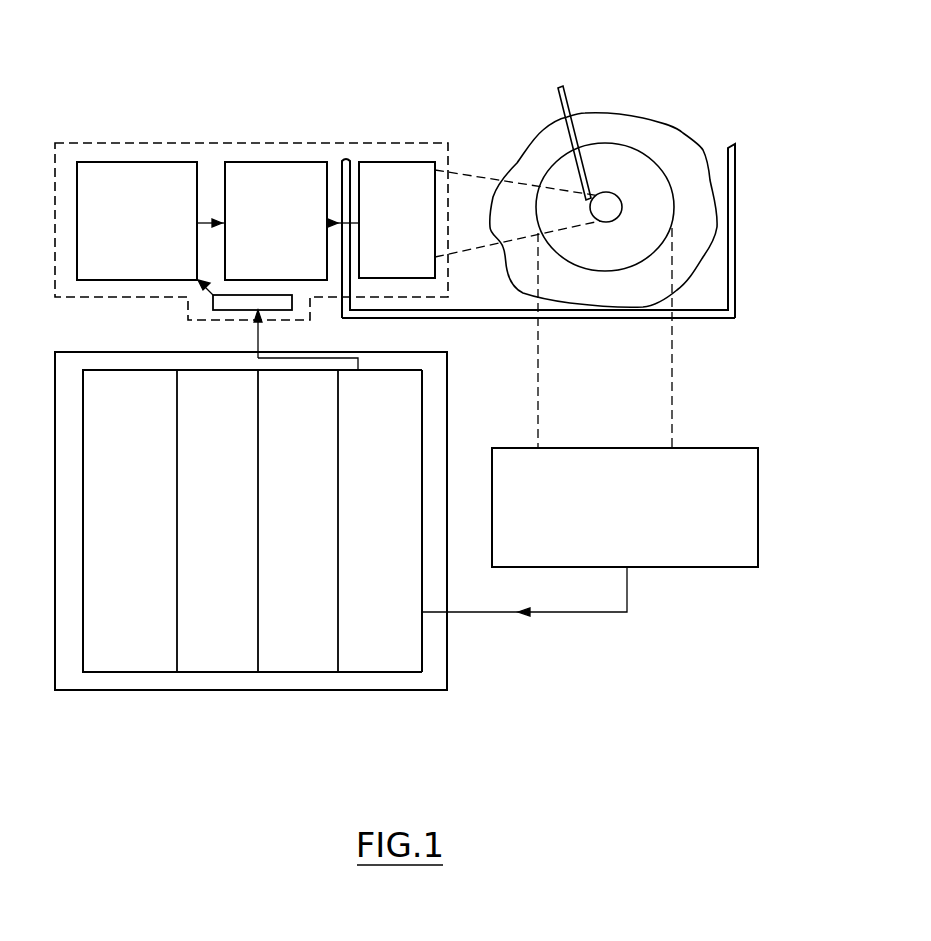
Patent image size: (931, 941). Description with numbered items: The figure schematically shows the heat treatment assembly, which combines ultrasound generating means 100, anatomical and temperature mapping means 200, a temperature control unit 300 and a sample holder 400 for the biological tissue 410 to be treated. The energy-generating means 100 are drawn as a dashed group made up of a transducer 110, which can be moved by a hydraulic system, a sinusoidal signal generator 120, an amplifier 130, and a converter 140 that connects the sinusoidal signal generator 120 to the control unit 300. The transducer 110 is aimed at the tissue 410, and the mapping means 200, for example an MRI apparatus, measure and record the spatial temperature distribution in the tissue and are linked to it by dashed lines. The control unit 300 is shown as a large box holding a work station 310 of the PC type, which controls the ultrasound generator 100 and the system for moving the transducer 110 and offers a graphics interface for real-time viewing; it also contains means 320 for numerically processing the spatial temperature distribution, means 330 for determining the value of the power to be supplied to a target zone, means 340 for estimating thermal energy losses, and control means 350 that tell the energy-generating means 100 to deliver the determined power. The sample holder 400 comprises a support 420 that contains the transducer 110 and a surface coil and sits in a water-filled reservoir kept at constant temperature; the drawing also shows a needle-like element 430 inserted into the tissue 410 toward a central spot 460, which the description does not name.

The ultrasound generating means 100 is at (221, 142).
The transducer 110 is at (393, 175).
The sinusoidal signal generator 120 is at (112, 177).
The amplifier 130 is at (287, 180).
The converter 140 is at (280, 300).
The anatomical and temperature mapping means 200 is at (678, 556).
The temperature control unit 300 is at (78, 692).
The work station 310 is at (347, 678).
The means for alleviating and numerically processing the spatial temperature distrib 320 is at (130, 663).
The means for determining the value of the power 330 is at (205, 660).
The means for estimating thermal energy losses 340 is at (270, 660).
The control means 350 is at (412, 655).
The sample holder 400 is at (739, 275).
The biological tissue 410 is at (683, 150).
The support 420 is at (701, 320).
The needle 430 is at (570, 90).
The measurement spot 460 is at (612, 196).